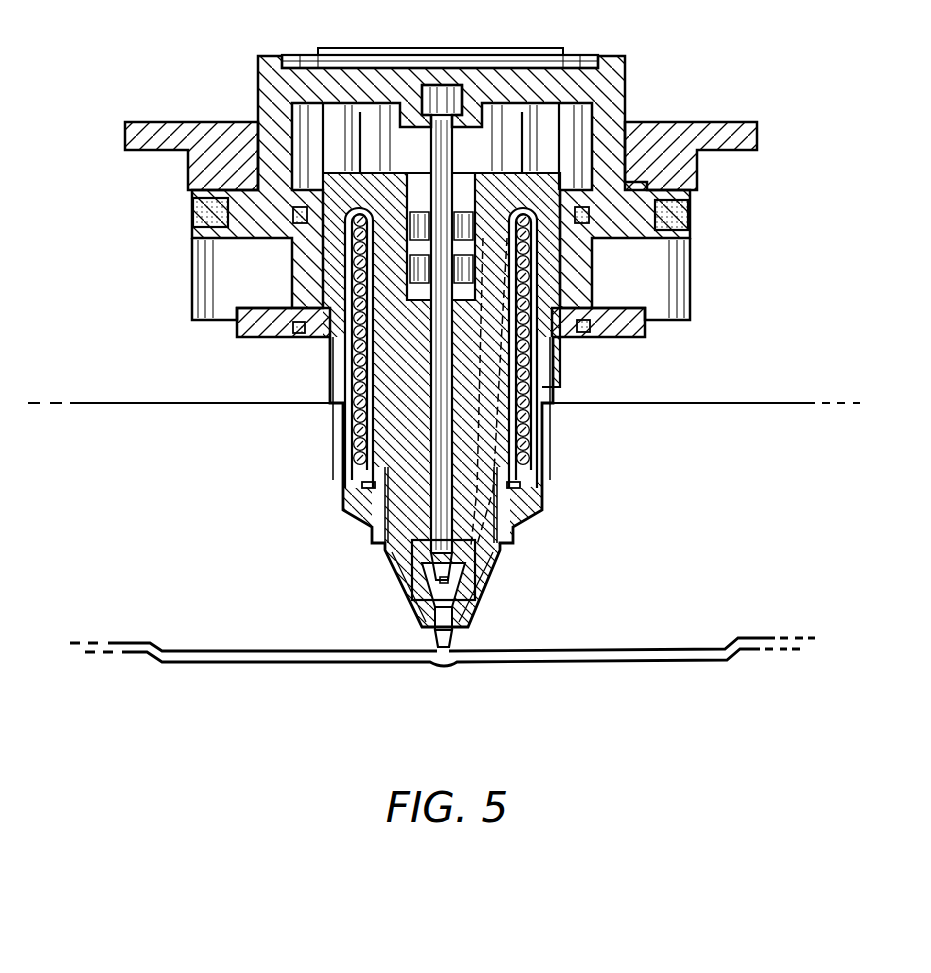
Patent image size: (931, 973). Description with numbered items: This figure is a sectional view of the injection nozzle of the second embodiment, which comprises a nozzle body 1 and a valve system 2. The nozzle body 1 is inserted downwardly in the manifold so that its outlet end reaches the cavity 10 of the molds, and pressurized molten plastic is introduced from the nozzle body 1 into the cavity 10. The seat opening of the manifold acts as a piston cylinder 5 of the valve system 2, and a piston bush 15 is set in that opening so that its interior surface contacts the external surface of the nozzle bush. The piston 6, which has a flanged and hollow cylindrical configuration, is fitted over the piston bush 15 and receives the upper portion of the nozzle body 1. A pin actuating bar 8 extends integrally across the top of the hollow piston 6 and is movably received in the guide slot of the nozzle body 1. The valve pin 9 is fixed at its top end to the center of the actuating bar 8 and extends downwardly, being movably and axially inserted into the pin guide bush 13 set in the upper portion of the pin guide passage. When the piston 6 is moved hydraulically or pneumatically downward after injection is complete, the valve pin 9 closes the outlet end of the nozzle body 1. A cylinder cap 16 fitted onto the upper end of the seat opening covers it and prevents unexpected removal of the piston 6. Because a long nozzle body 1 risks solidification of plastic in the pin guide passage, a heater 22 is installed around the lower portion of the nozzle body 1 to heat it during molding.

The nozzle body 1 is at (398, 552).
The valve system 2 is at (230, 94).
The piston cylinder 5 is at (203, 277).
The piston 6 is at (625, 88).
The pin actuating bar 8 is at (562, 74).
The valve pin 9 is at (448, 535).
The cavity 10 is at (335, 656).
The pin guide bush 13 is at (350, 438).
The piston bush 15 is at (238, 337).
The cylinder cap 16 is at (717, 120).
The heater 22 is at (542, 443).